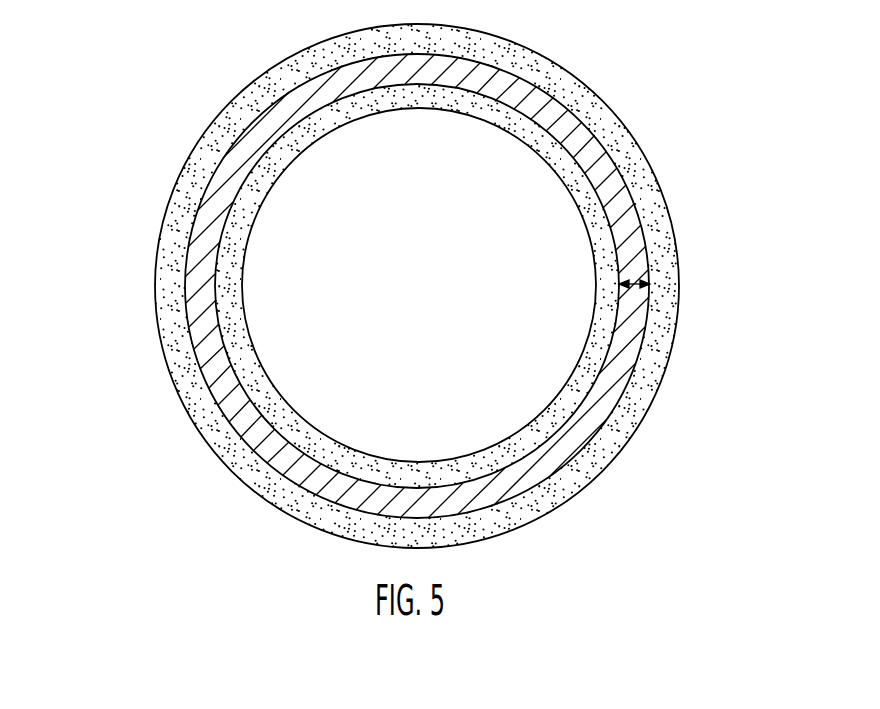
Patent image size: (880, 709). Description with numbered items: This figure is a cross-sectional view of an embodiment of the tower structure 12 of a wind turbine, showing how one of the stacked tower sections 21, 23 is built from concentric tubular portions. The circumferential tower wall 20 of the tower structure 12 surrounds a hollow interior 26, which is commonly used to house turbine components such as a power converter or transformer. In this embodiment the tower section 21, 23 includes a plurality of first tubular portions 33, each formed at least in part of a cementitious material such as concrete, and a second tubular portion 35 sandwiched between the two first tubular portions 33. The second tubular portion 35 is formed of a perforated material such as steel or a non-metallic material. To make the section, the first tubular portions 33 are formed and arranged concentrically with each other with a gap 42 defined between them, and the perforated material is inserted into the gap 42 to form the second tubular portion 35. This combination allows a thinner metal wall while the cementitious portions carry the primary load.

The tower structure 12 is at (712, 157).
The circumferential tower wall 20 is at (163, 223).
The tower section 21 is at (352, 286).
The tower section 23 is at (156, 306).
The hollow interior 26 is at (433, 296).
The first tubular portion 33 is at (187, 402).
The second tubular portion 35 is at (255, 430).
The gap 42 is at (634, 288).